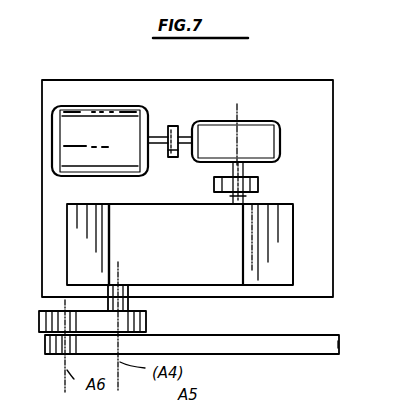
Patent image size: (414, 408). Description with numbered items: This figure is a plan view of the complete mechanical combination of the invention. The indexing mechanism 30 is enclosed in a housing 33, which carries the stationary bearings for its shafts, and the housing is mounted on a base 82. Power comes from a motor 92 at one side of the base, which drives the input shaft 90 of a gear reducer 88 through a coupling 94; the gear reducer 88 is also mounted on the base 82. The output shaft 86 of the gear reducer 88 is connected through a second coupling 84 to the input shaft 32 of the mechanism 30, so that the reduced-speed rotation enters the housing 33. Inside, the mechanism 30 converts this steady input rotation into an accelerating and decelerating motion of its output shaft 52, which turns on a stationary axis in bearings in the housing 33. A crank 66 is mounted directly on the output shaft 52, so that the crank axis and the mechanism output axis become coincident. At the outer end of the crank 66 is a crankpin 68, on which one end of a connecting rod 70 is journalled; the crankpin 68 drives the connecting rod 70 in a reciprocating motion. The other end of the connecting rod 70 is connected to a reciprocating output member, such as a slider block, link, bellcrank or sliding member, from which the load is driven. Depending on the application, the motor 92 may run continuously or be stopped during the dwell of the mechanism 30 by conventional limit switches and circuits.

The mechanism 30 is at (312, 247).
The input shaft 32 is at (246, 198).
The housing 33 is at (294, 268).
The output shaft 52 is at (130, 304).
The crank 66 is at (205, 325).
The crankpin 68 is at (52, 334).
The connecting rod 70 is at (300, 340).
The base 82 is at (333, 297).
The coupling 84 is at (260, 184).
The output shaft 86 is at (246, 172).
The gear reducer 88 is at (275, 120).
The input shaft 90 is at (187, 139).
The motor 92 is at (52, 133).
The coupling 94 is at (172, 125).